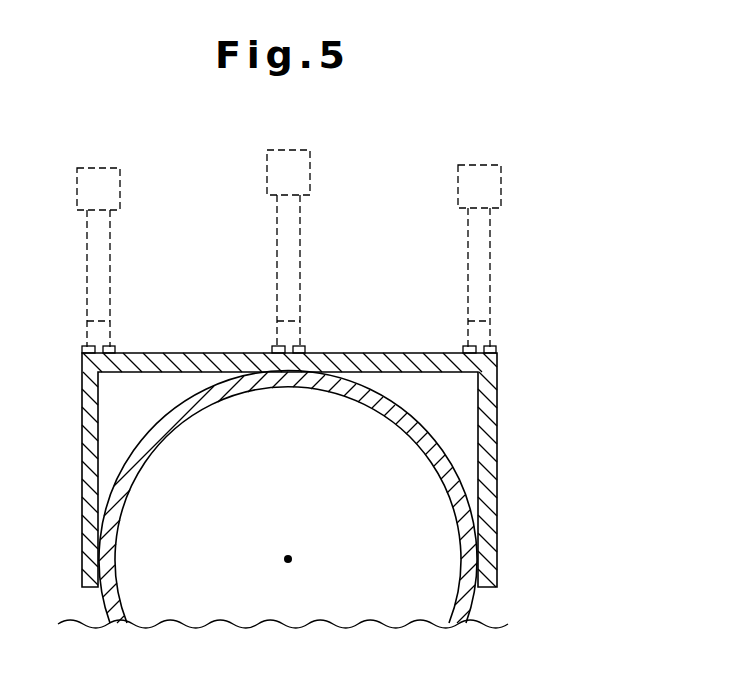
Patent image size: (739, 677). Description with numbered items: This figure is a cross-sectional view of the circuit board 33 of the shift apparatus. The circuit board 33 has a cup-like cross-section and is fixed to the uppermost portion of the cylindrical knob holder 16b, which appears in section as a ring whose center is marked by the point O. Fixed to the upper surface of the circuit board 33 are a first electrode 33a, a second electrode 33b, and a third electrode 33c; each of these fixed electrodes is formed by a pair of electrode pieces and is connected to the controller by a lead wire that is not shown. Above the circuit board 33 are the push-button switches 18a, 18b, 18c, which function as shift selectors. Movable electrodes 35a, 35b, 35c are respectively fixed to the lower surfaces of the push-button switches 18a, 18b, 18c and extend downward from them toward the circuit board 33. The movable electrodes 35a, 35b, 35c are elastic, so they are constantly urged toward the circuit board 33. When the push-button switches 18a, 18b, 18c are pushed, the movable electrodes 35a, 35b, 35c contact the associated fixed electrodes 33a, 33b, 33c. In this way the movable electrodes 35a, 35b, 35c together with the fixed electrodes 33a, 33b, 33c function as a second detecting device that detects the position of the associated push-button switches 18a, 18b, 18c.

The push-button switch 18a is at (287, 150).
The push-button switch 18b is at (97, 168).
The push-button switch 18c is at (478, 165).
The movable electrode 35a is at (300, 253).
The movable electrode 35b is at (110, 253).
The movable electrode 35c is at (490, 253).
The first electrode 33a is at (280, 346).
The second electrode 33b is at (90, 346).
The third electrode 33c is at (471, 346).
The circuit board 33 is at (490, 447).
The knob holder 16b is at (395, 414).
The center of circle O is at (302, 556).